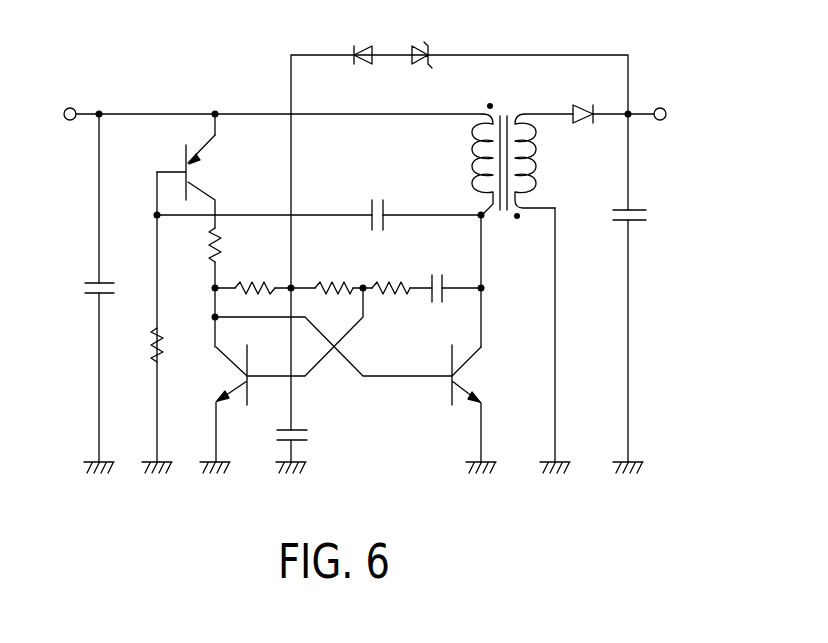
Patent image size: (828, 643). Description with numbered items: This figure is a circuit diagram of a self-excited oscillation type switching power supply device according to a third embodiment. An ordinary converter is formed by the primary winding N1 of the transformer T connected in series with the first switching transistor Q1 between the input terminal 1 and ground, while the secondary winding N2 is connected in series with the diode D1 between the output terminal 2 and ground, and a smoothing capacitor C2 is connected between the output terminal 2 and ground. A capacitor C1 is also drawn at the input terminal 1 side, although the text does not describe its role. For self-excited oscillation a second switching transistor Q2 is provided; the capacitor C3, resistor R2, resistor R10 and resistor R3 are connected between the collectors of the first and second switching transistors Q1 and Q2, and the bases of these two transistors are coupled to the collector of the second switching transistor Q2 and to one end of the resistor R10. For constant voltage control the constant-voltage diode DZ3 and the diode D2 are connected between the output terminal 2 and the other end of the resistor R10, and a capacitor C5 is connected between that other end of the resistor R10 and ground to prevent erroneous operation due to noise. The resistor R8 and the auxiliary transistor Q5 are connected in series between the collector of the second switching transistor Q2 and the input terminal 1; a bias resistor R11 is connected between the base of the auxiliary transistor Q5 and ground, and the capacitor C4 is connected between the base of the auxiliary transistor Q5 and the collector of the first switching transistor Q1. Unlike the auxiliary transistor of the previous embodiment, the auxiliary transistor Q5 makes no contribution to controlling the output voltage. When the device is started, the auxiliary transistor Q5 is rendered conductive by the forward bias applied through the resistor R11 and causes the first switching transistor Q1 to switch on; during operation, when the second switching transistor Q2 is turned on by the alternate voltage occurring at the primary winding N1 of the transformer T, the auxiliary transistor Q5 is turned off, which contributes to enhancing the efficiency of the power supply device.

The input terminal 1 is at (64, 107).
The output terminal 2 is at (666, 107).
The diode D2 is at (357, 37).
The constant-voltage diode DZ3 is at (424, 39).
The diode D1 is at (582, 96).
The primary winding N1 is at (464, 159).
The secondary winding N2 is at (544, 166).
The transformer T is at (502, 217).
The capacitor C4 is at (377, 200).
The smoothing capacitor C2 is at (641, 237).
The capacitor C3 is at (439, 267).
The input capacitor C1 is at (88, 309).
The capacitor C5 is at (313, 447).
The auxiliary transistor Q5 is at (203, 175).
The second switching transistor Q2 is at (213, 403).
The first switching transistor Q1 is at (483, 403).
The resistor R8 is at (196, 246).
The bias resistor R11 is at (135, 366).
The resistor R3 is at (255, 270).
The resistor R10 is at (333, 268).
The resistor R2 is at (391, 268).